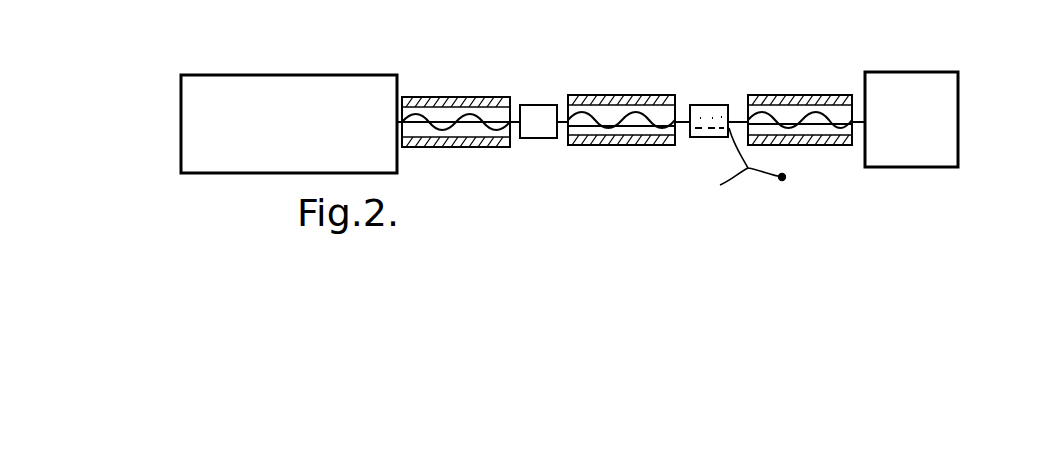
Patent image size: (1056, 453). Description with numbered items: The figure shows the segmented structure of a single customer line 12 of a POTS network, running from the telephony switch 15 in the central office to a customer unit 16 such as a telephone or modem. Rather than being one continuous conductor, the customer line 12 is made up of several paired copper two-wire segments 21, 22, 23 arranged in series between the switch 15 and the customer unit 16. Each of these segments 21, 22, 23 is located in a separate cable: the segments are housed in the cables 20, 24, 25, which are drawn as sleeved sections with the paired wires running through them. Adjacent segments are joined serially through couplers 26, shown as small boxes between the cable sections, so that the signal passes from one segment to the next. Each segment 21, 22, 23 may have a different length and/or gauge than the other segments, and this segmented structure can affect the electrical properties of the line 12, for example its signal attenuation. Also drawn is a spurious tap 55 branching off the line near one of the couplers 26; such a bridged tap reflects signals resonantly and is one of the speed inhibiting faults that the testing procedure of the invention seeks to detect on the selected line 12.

The customer line 12 is at (599, 86).
The telephony switch 15 is at (181, 126).
The customer unit 16 is at (958, 127).
The cable 20 is at (465, 147).
The paired copper two-wire segment 21 is at (458, 120).
The paired copper two-wire segment 22 is at (617, 128).
The paired copper two-wire segment 23 is at (780, 118).
The cable 24 is at (566, 144).
The cable 25 is at (850, 145).
The coupler 26 is at (540, 105).
The spurious tap 55 is at (734, 169).